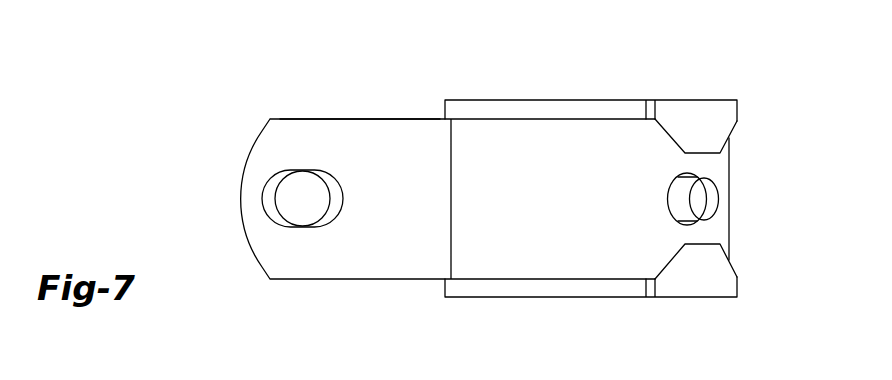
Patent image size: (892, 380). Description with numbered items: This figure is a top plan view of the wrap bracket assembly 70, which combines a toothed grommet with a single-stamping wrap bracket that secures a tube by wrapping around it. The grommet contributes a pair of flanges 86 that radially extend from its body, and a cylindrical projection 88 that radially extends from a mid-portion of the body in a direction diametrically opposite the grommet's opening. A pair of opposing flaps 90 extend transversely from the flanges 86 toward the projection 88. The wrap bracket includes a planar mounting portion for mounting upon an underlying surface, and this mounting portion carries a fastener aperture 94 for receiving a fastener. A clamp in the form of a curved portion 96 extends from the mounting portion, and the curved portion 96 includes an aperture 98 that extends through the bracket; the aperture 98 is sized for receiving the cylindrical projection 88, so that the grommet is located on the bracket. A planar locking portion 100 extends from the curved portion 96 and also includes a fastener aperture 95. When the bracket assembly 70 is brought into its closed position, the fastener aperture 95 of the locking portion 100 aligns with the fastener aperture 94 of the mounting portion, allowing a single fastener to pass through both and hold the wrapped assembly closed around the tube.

The bracket assembly 70 is at (546, 59).
The flanges 86 is at (480, 100).
The cylindrical projection 88 is at (705, 200).
The flaps 90 is at (690, 120).
The fastener aperture 94 is at (329, 187).
The fastener aperture 95 is at (342, 205).
The curved portion 96 is at (730, 242).
The aperture 98 is at (670, 202).
The locking portion 100 is at (355, 125).